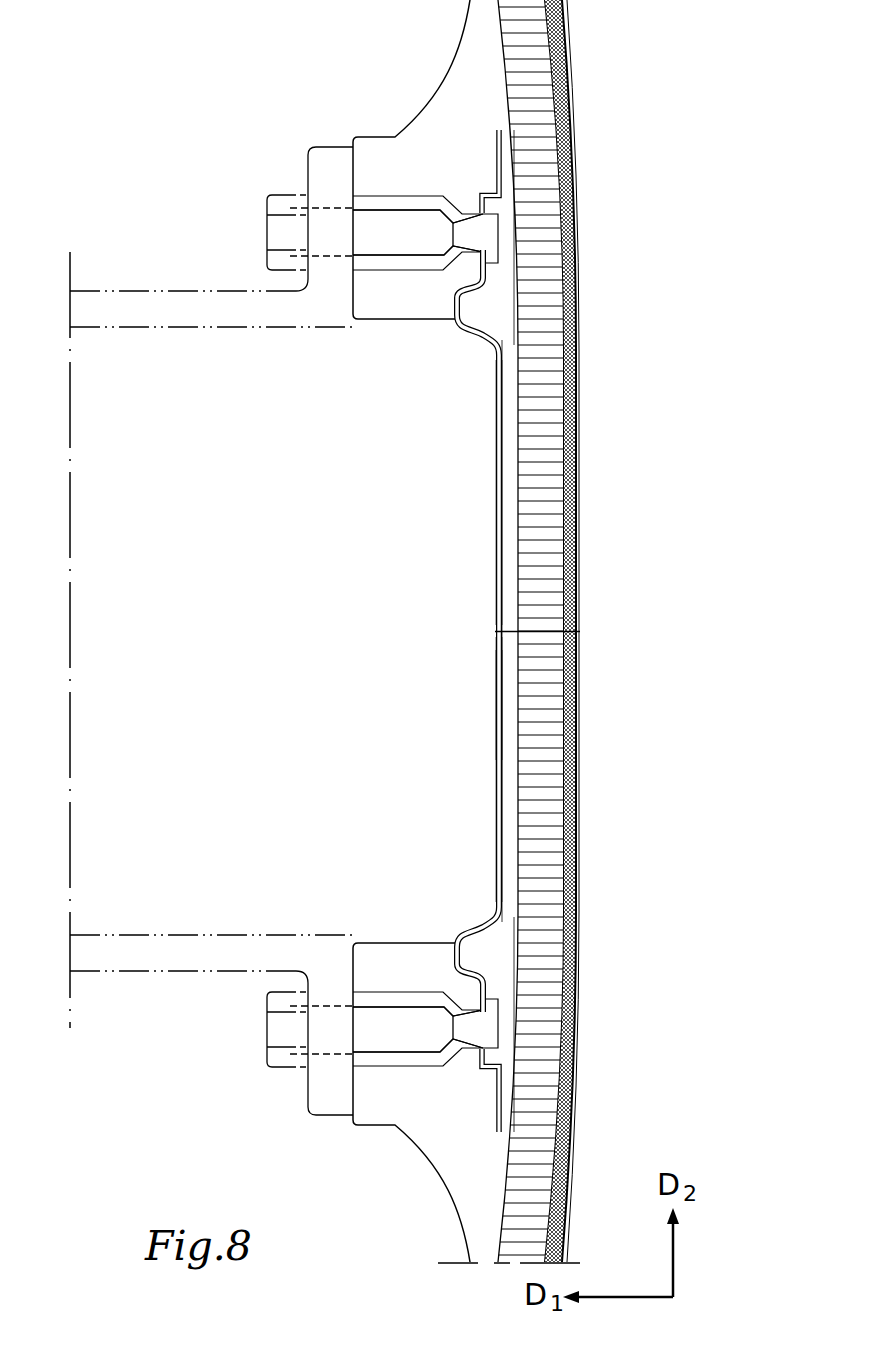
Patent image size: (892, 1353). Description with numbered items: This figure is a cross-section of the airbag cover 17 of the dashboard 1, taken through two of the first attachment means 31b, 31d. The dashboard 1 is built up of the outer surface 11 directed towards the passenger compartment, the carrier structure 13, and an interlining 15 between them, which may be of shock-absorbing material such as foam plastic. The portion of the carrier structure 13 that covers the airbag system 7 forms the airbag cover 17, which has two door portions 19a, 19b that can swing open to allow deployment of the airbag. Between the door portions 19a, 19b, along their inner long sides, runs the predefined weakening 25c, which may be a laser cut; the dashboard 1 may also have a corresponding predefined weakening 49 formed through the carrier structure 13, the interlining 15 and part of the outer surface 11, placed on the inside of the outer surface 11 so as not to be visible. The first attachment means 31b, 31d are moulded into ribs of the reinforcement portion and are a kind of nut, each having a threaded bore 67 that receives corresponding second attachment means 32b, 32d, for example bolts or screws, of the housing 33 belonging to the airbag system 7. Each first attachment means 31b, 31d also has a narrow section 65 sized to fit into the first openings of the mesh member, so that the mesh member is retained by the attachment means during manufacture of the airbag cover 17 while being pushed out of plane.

The dashboard 1 is at (660, 90).
The airbag system 7 is at (196, 607).
The outer surface 11 is at (576, 405).
The carrier structure 13 is at (508, 490).
The interlining 15 is at (550, 518).
The airbag cover 17 is at (456, 694).
The door portion 19a is at (458, 510).
The door portion 19b is at (456, 806).
The predefined weakening 25c is at (497, 632).
The first attachment means 31b is at (402, 262).
The first attachment means 31d is at (402, 1000).
The second attachment means 32b is at (277, 233).
The second attachment means 32d is at (275, 1029).
The housing 33 is at (181, 264).
The predefined weakening 49 is at (572, 632).
The narrow section 65 is at (478, 233).
The threaded bore 67 is at (415, 246).